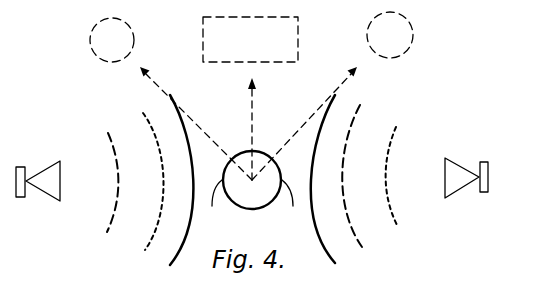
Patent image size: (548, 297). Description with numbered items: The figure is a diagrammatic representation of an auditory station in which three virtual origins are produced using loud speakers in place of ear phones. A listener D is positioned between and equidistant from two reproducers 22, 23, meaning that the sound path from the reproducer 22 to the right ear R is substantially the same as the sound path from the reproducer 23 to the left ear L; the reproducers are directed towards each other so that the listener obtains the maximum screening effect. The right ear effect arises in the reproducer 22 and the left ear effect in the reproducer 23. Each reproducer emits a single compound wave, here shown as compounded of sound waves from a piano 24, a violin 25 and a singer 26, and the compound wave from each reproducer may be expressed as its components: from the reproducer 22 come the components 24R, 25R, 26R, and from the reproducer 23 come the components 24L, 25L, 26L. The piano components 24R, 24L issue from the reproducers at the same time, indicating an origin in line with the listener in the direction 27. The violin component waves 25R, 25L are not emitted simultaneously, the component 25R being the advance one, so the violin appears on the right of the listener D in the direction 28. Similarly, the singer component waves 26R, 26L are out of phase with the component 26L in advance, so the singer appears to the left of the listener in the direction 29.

The reproducer 22 is at (479, 186).
The reproducer 23 is at (45, 198).
The piano 24 is at (250, 39).
The piano component 24L is at (183, 111).
The piano component 24R is at (318, 131).
The violin 25 is at (390, 35).
The violin component wave 25L is at (110, 150).
The violin component wave 25R is at (358, 114).
The singer 26 is at (112, 40).
The singer component wave 26L is at (150, 127).
The singer component wave 26R is at (398, 132).
The direction 27 is at (253, 109).
The direction 28 is at (344, 83).
The direction 29 is at (163, 91).
The listener D is at (252, 180).
The left ear L is at (213, 201).
The right ear R is at (291, 201).